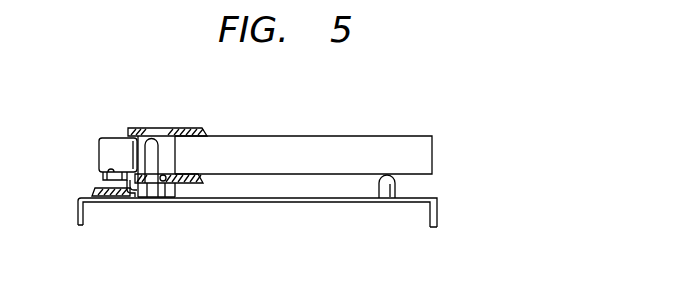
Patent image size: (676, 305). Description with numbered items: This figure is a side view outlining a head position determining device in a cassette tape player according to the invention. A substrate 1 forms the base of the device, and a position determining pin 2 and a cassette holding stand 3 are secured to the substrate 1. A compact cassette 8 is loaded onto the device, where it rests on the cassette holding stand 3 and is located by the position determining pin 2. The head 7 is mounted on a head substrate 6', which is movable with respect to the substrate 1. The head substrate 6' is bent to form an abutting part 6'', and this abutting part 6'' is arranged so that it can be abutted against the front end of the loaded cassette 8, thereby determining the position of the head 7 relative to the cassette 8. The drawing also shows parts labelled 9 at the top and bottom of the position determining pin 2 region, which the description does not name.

The substrate 1 is at (306, 200).
The position determining pin 2 is at (162, 192).
The cassette holding stand 3 is at (385, 196).
The head substrate 6' is at (111, 221).
The abutting part 6'' is at (141, 209).
The head 7 is at (103, 150).
The compact cassette 8 is at (329, 140).
The insulating bushing 9 is at (156, 127).